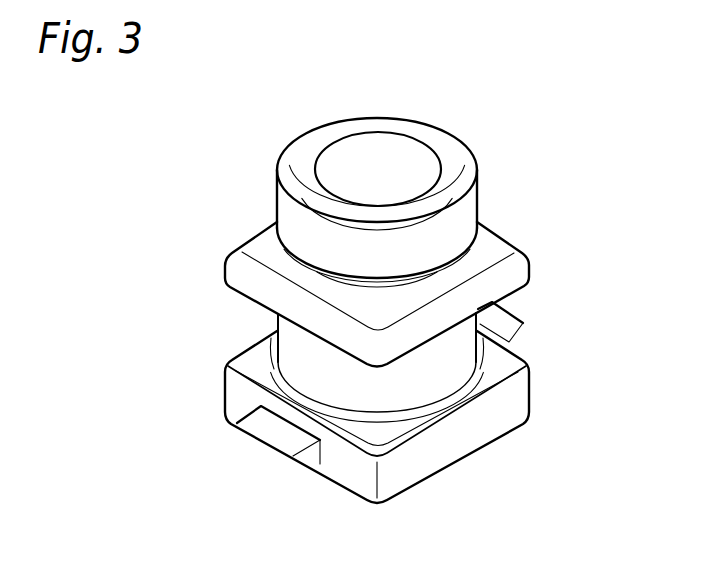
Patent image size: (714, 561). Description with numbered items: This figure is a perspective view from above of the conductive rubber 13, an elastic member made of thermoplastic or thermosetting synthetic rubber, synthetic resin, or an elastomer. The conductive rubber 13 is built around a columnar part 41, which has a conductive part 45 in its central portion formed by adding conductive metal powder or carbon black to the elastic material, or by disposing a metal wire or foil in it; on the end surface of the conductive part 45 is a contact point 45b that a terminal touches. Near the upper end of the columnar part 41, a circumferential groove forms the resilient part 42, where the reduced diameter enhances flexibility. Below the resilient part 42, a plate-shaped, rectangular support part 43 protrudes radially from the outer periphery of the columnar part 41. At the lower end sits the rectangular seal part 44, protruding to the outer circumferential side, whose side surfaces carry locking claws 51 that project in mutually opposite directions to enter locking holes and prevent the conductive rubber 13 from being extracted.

The conductive rubber 13 is at (517, 180).
The columnar part 41 is at (292, 347).
The resilient part 42 is at (275, 248).
The support part 43 is at (227, 261).
The seal part 44 is at (453, 455).
The conductive part 45 is at (408, 153).
The contact point 45b is at (365, 133).
The locking claw 51 is at (518, 313).